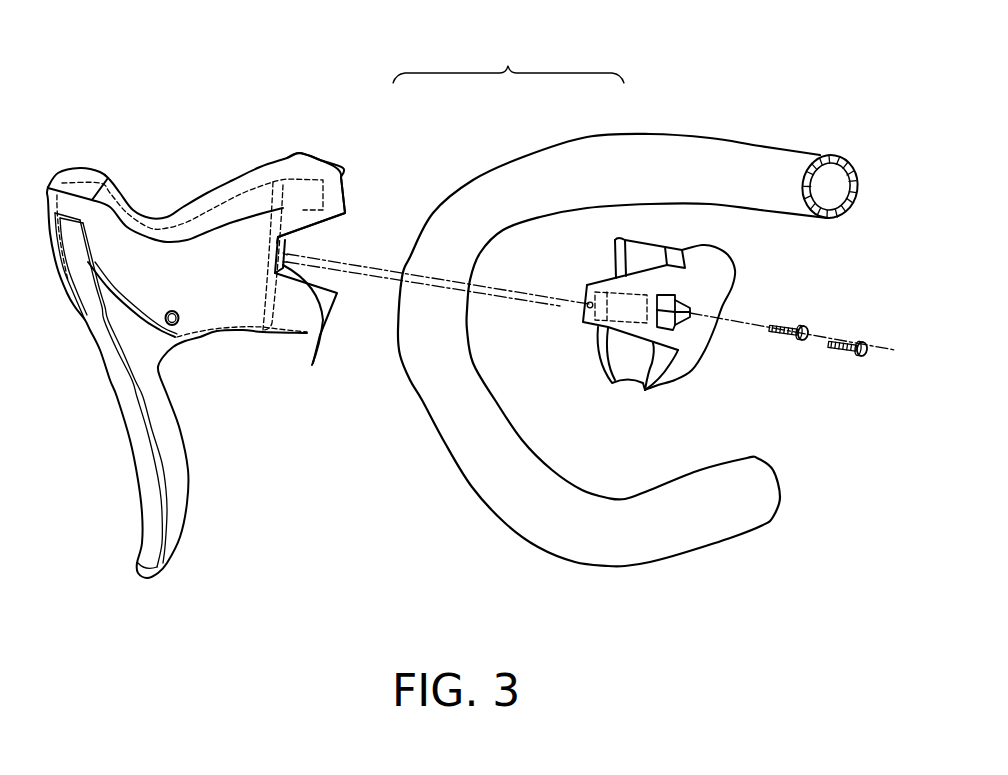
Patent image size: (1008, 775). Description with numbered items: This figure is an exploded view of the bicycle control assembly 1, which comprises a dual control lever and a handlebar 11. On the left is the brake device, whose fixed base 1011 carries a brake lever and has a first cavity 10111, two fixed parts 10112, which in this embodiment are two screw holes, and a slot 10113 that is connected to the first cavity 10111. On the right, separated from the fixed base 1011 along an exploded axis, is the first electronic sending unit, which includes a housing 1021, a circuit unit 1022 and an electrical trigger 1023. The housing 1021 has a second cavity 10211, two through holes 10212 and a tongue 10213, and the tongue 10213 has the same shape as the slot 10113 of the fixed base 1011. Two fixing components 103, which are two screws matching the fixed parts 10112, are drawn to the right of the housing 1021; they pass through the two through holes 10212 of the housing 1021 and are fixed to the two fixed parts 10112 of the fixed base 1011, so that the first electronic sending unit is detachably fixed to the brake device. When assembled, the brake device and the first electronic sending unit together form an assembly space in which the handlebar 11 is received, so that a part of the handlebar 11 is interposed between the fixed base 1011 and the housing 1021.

The bicycle control assembly 1 is at (137, 40).
The handlebar 11 is at (693, 163).
The fixed base 1011 is at (252, 180).
The first cavity 10111 is at (323, 173).
The fixed parts 10112 is at (336, 300).
The slot 10113 is at (327, 240).
The housing 1021 is at (712, 280).
The second cavity 10211 is at (644, 258).
The through holes 10212 is at (585, 310).
The tongue 10213 is at (637, 344).
The circuit unit 1022 is at (625, 310).
The electrical trigger 1023 is at (675, 325).
The fixing components 103 is at (860, 343).